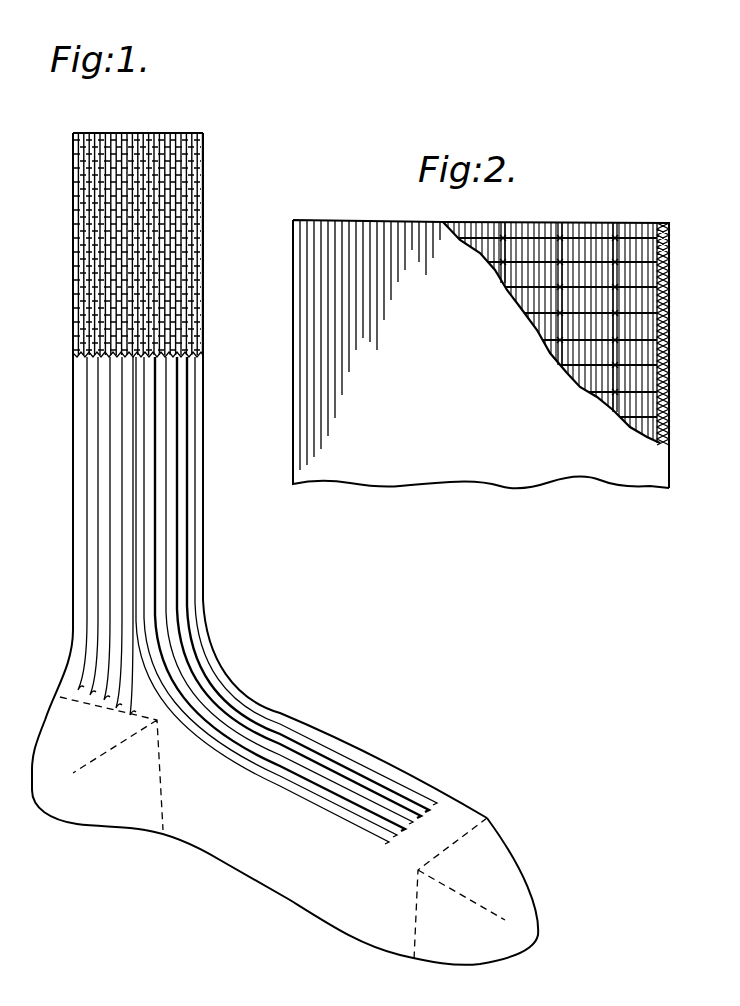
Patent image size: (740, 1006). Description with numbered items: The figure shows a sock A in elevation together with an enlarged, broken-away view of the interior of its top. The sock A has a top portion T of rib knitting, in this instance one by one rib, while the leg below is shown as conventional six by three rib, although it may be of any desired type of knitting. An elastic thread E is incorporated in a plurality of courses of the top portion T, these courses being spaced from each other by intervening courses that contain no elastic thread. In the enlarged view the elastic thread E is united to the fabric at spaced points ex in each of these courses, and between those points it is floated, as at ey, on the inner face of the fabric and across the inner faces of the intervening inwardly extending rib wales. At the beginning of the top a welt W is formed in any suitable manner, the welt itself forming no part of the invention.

In FIG. 1, the welt W is at (73, 134).
In FIG. 1, the top portion T is at (73, 255).
In FIG. 2, the top portion T is at (398, 465).
In FIG. 1, the elastic thread E is at (200, 181).
In FIG. 2, the elastic thread E is at (523, 228).
In FIG. 1, the sock A is at (73, 545).
In FIG. 2, the spaced points ex is at (504, 262).
In FIG. 2, the floats ey is at (587, 287).